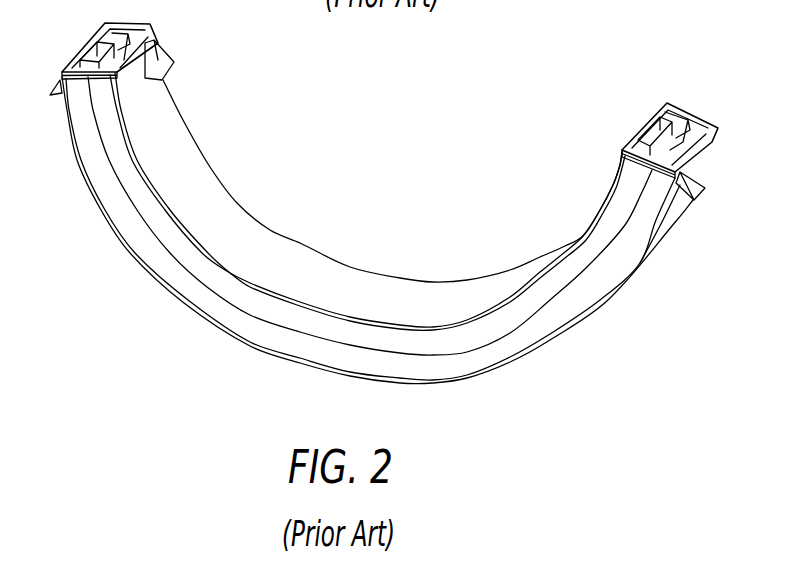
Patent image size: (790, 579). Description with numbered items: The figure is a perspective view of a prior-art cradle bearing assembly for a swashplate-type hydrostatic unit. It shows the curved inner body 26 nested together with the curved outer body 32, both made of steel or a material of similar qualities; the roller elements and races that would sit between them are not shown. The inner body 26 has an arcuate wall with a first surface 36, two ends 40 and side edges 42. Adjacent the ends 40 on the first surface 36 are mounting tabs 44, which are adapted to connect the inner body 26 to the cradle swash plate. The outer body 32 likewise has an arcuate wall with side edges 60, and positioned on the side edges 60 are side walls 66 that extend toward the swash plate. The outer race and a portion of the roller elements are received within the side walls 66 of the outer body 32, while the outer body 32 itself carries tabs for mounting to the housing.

The inner body 26 is at (237, 223).
The outer body 32 is at (183, 285).
The first surface 36 is at (340, 300).
The ends 40 is at (129, 27).
The side edges 42 is at (212, 169).
The mounting tabs 44 is at (162, 64).
The side edges 60 is at (124, 233).
The side walls 66 is at (300, 354).